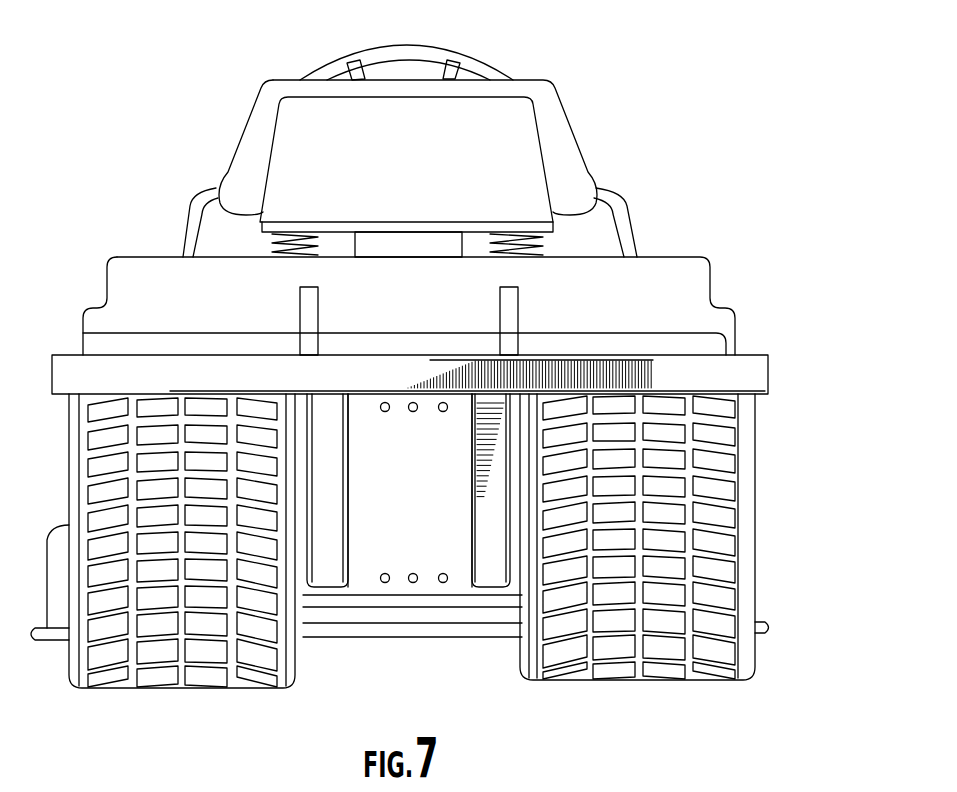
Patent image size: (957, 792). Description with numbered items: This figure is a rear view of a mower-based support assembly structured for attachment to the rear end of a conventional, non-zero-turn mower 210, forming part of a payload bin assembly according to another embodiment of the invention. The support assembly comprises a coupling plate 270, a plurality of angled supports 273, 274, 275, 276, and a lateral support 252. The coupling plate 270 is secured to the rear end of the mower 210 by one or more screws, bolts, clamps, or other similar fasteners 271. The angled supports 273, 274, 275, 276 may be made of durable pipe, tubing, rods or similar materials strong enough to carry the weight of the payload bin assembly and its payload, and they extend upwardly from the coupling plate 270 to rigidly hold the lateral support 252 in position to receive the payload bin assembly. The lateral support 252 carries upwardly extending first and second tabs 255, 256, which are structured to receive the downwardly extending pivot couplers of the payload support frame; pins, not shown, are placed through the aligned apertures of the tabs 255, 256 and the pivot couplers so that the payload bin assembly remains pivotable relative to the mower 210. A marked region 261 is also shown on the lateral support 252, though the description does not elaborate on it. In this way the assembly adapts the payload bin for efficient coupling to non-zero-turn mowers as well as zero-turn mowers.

The non-zero-turn mower 210 is at (582, 105).
The lateral support 252 is at (770, 353).
The first tab 255 is at (520, 300).
The second tab 256 is at (300, 297).
The label area 261 is at (640, 374).
The coupling plate 270 is at (360, 585).
The fasteners 271 is at (443, 584).
The angled support 273 is at (333, 590).
The angled support 274 is at (488, 583).
The angled support 275 is at (313, 515).
The angled support 276 is at (477, 513).